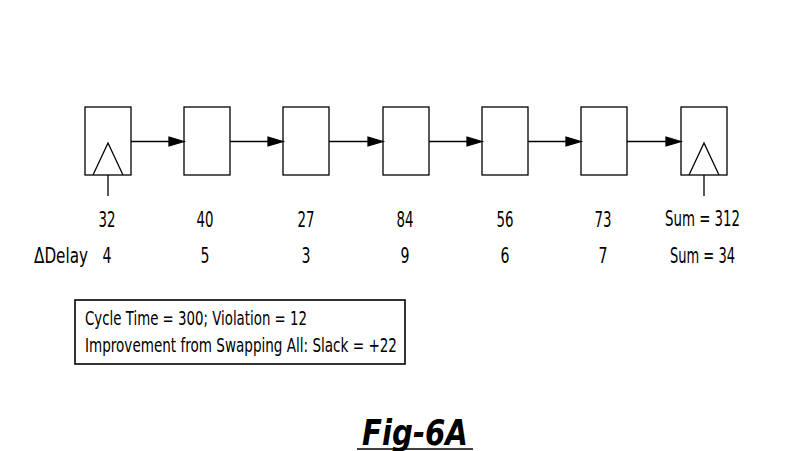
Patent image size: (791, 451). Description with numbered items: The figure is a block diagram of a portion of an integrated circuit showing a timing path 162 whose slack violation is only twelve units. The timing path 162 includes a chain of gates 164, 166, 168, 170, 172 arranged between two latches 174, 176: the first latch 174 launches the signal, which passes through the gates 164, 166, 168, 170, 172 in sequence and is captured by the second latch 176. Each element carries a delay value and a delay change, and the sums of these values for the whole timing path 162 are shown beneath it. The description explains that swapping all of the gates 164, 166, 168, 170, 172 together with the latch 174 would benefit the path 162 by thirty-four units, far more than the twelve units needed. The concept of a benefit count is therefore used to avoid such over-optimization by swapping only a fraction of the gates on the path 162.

The timing path 162 is at (406, 98).
The latch 174 is at (109, 107).
The gate 164 is at (208, 107).
The gate 166 is at (307, 107).
The gate 168 is at (407, 107).
The gate 170 is at (506, 107).
The gate 172 is at (605, 107).
The latch 176 is at (705, 107).